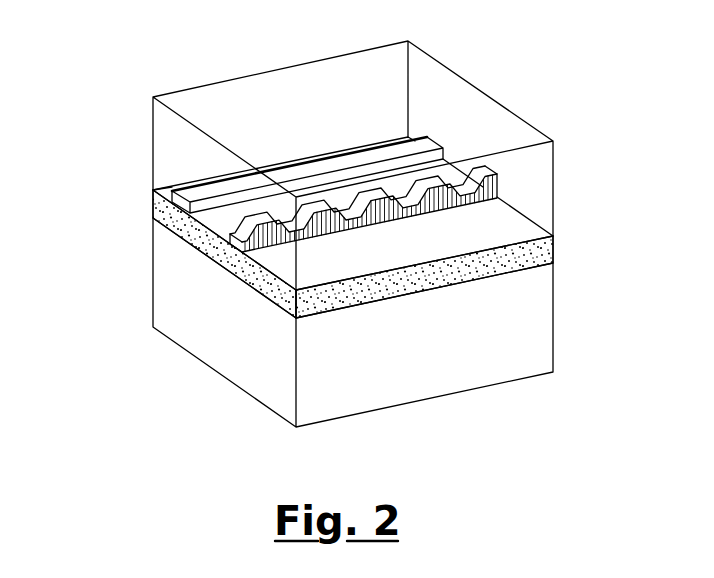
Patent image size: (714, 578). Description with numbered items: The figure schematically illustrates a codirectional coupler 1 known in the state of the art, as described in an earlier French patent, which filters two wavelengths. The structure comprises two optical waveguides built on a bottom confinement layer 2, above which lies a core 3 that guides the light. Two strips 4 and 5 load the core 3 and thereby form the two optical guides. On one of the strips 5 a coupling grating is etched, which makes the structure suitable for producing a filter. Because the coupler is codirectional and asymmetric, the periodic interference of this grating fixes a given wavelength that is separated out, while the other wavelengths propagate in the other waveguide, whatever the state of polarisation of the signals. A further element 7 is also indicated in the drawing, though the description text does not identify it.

The semiconductor laser device 1 is at (507, 94).
The bottom confinement layer 2 is at (248, 337).
The core 3 is at (553, 247).
The strip 4 is at (431, 140).
The strip 5 is at (497, 190).
The InP cladding layer 7 is at (216, 219).